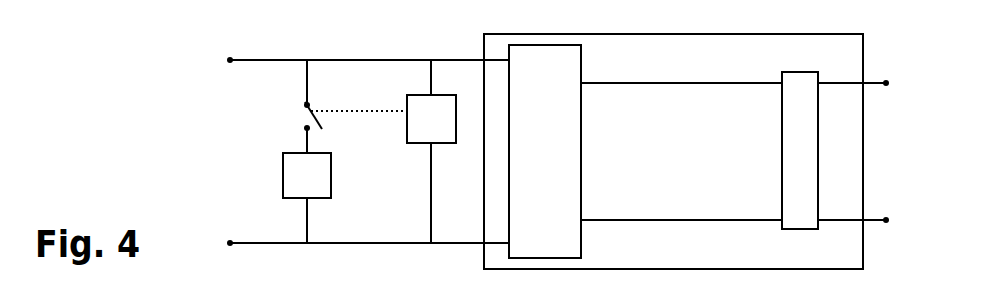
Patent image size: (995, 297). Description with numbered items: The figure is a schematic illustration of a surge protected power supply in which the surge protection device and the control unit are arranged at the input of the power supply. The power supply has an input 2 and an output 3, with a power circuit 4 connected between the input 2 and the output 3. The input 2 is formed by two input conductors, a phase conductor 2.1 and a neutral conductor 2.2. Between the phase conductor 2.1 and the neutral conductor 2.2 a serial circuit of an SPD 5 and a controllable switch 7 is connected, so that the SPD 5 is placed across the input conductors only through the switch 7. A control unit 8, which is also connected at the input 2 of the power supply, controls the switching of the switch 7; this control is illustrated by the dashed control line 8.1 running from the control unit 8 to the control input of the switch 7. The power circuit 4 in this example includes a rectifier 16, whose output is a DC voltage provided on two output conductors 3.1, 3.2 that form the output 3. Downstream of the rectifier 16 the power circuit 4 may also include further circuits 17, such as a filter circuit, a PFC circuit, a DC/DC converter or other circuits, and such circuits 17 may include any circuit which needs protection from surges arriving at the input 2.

The input 2 is at (213, 153).
The phase conductor 2.1 is at (263, 59).
The neutral conductor 2.2 is at (255, 245).
The output 3 is at (901, 153).
The first output conductor 3.1 is at (630, 82).
The second output conductor 3.2 is at (650, 222).
The power circuit 4 is at (673, 151).
The SPD 5 is at (307, 198).
The switch 7 is at (305, 115).
The control unit 8 is at (431, 151).
The control line 8.1 is at (362, 110).
The rectifier 16 is at (545, 151).
The further circuits 17 is at (800, 150).